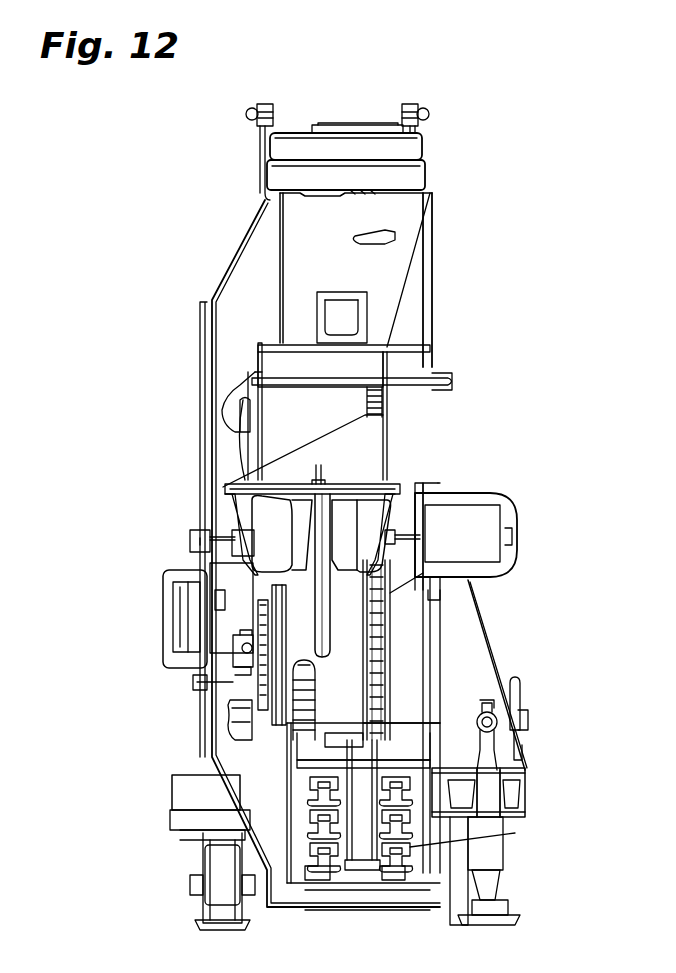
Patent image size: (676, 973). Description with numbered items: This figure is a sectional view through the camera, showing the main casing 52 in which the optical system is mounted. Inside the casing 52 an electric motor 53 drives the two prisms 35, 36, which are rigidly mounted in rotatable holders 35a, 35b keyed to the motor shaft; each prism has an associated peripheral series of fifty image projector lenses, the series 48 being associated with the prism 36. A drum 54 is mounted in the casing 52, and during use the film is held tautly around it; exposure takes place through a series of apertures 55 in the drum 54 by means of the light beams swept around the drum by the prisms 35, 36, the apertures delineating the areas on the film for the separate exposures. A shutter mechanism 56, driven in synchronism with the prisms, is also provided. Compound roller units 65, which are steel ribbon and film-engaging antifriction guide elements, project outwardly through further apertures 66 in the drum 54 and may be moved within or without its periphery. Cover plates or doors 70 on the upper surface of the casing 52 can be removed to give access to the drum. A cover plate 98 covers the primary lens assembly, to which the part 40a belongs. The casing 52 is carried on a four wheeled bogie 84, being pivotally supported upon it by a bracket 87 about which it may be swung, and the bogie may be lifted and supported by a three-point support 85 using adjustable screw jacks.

The cover plates or doors 70 is at (364, 124).
The main casing 52 is at (418, 292).
The prism 36 is at (380, 482).
The prism 35 is at (285, 515).
The rotatable holder 35a is at (280, 561).
The rotatable holder 35b is at (323, 552).
The electric motor 53 is at (462, 512).
The bracket 87 is at (473, 660).
The cover plate for the primary lens assembly 98 is at (160, 618).
The valve 40a is at (257, 622).
The shutter mechanism 56 is at (300, 665).
The image projector lenses 48 is at (390, 681).
The drum 54 is at (293, 778).
The further apertures 66 is at (307, 828).
The apertures 55 is at (337, 868).
The compound roller units 65 is at (479, 807).
The three-point support 85 is at (507, 917).
The four wheeled bogie 84 is at (172, 796).